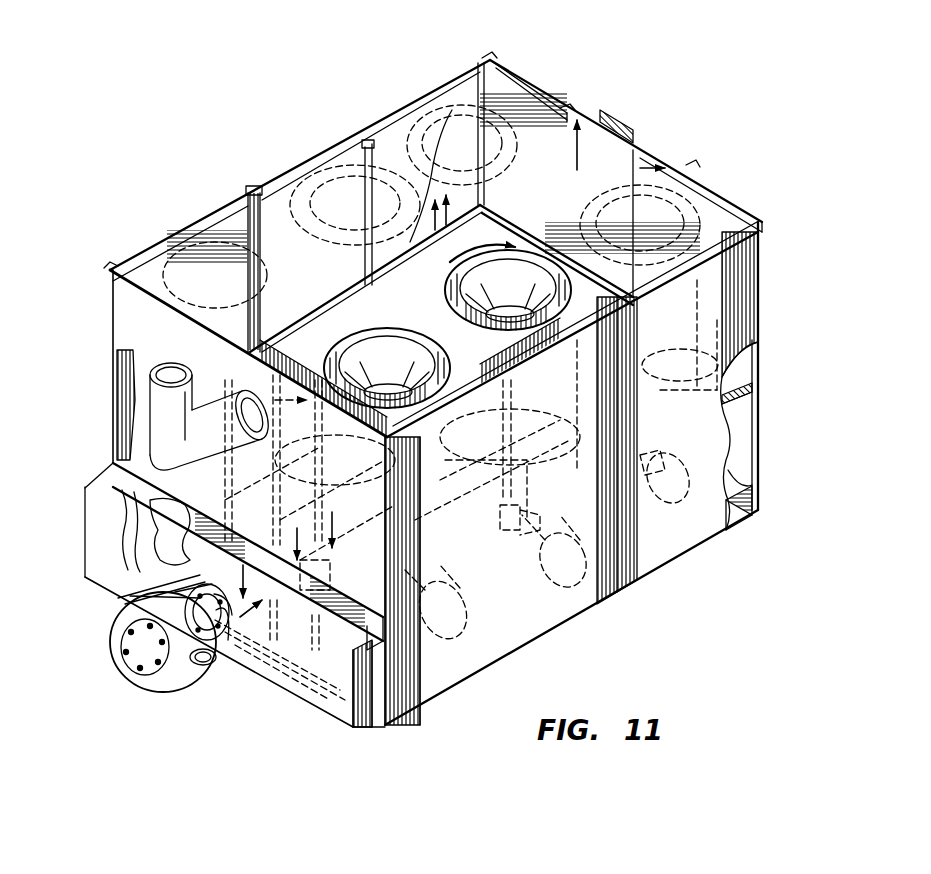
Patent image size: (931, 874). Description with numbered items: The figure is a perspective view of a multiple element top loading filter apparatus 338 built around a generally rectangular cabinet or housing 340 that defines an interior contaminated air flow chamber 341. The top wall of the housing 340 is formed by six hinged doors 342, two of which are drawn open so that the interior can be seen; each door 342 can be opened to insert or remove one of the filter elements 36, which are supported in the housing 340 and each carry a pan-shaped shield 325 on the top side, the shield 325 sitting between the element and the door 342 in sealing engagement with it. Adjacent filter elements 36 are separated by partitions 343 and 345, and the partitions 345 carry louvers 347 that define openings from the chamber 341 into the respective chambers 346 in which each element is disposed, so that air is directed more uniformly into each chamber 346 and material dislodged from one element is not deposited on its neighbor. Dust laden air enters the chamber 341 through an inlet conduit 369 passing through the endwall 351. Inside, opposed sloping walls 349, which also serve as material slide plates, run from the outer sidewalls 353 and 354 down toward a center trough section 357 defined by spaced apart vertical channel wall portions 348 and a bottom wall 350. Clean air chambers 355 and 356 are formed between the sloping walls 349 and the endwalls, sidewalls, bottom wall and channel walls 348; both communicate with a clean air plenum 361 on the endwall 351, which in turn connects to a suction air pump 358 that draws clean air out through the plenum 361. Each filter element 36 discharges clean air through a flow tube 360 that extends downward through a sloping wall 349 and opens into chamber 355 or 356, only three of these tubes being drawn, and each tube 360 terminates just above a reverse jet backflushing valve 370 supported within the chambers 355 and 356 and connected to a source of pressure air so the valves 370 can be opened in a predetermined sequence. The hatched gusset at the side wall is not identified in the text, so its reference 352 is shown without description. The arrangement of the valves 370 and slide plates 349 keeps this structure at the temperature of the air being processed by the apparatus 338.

The filter element 36 is at (427, 155).
The pan-shaped shield 325 is at (503, 78).
The filter apparatus 338 is at (738, 193).
The cabinet or housing 340 is at (762, 305).
The contaminated air flow chamber 341 is at (442, 110).
The hinged door 342 is at (452, 80).
The partition 343 is at (380, 122).
The partition 345 is at (395, 335).
The filter element chamber 346 is at (743, 367).
The louver 347 is at (658, 133).
The vertical channel wall portion 348 is at (260, 680).
The sloping wall 349 is at (747, 407).
The bottom wall 350 is at (745, 513).
The endwall 351 is at (113, 463).
The hatched gusset 352 is at (762, 388).
The outer housing sidewall 353 is at (112, 393).
The outer housing sidewall 354 is at (740, 440).
The clean air chamber 355 is at (130, 545).
The clean air chamber 356 is at (743, 483).
The center trough section 357 is at (290, 698).
The suction air pump 358 is at (108, 657).
The clean air discharge flow tube 360 is at (672, 447).
The clean air plenum 361 is at (400, 690).
The inlet conduit 369 is at (157, 405).
The reverse jet backflushing valve 370 is at (615, 490).